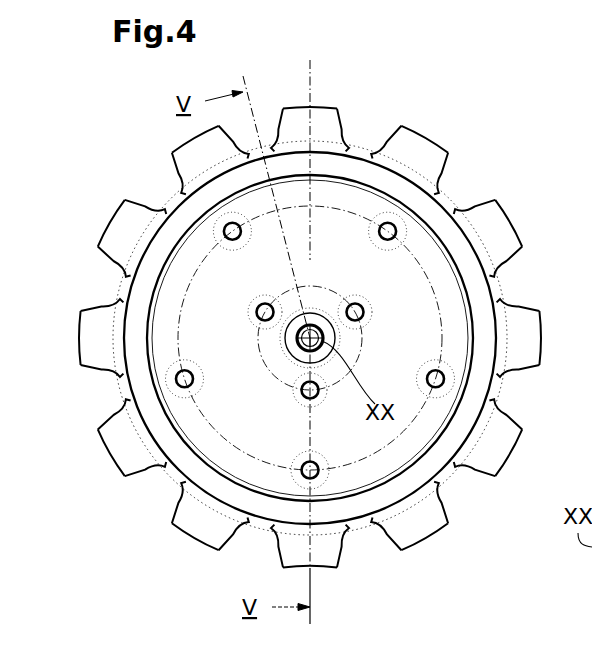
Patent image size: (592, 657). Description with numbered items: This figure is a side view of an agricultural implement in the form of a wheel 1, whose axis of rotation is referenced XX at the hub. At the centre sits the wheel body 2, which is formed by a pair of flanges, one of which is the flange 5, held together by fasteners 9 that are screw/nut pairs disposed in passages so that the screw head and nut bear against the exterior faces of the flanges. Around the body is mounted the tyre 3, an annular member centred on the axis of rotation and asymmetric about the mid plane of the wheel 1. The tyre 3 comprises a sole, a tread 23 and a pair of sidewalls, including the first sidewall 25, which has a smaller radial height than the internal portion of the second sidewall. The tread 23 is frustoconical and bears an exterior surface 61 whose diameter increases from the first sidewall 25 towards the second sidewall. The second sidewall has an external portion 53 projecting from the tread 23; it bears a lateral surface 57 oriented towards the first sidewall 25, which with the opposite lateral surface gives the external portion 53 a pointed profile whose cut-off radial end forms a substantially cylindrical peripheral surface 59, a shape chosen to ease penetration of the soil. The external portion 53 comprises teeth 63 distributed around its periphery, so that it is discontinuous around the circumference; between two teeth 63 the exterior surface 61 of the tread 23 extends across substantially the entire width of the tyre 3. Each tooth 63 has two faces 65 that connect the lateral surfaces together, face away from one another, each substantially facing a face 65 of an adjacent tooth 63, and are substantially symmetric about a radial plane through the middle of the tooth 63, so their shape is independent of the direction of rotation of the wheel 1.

The wheel 1 is at (112, 556).
The wheel body 2 is at (243, 418).
The tyre 3 is at (258, 533).
The flange 5 is at (345, 203).
The fasteners 9 is at (229, 241).
The tread 23 is at (363, 527).
The first sidewall 25 is at (433, 215).
The external portion 53 is at (444, 167).
The lateral surface 57 is at (422, 144).
The peripheral surface 59 is at (107, 221).
The exterior surface 61 is at (444, 472).
The teeth 63 is at (77, 342).
The faces 65 is at (278, 124).